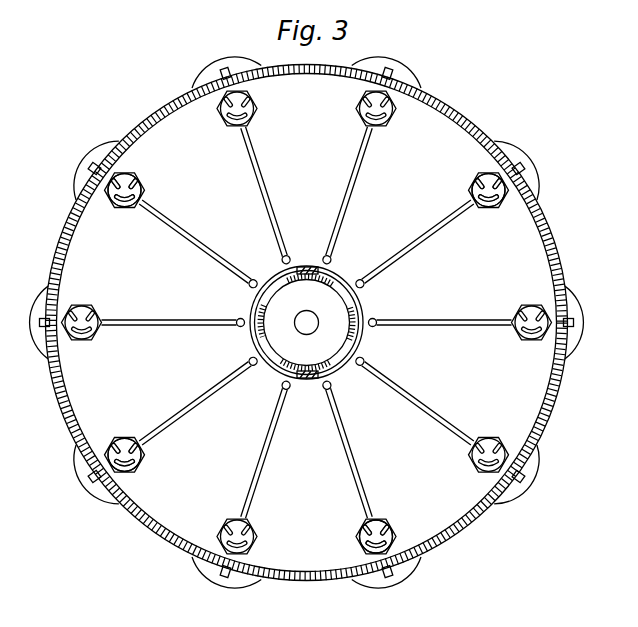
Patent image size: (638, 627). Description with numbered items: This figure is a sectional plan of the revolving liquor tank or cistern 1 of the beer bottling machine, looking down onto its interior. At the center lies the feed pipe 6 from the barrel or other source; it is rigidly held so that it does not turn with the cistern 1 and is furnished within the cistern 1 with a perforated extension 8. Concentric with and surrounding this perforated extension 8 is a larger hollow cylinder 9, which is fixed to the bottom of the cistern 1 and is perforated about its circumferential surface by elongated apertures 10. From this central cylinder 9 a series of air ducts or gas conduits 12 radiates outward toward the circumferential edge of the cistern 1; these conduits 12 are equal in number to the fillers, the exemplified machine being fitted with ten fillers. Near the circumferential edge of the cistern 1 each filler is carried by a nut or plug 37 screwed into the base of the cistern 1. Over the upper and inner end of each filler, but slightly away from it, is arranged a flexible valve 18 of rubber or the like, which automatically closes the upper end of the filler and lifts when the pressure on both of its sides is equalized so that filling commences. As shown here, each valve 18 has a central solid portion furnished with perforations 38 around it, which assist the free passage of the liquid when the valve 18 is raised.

The liquor tank or cistern 1 is at (70, 222).
The feed pipe 6 is at (316, 333).
The perforated extension 8 is at (297, 284).
The hollow cylinder 9 is at (305, 268).
The elongated apertures 10 is at (362, 303).
The air ducts or gas conduits 12 is at (348, 208).
The flexible valve 18 is at (112, 205).
The nut or plug 37 is at (223, 123).
The perforations 38 is at (480, 187).